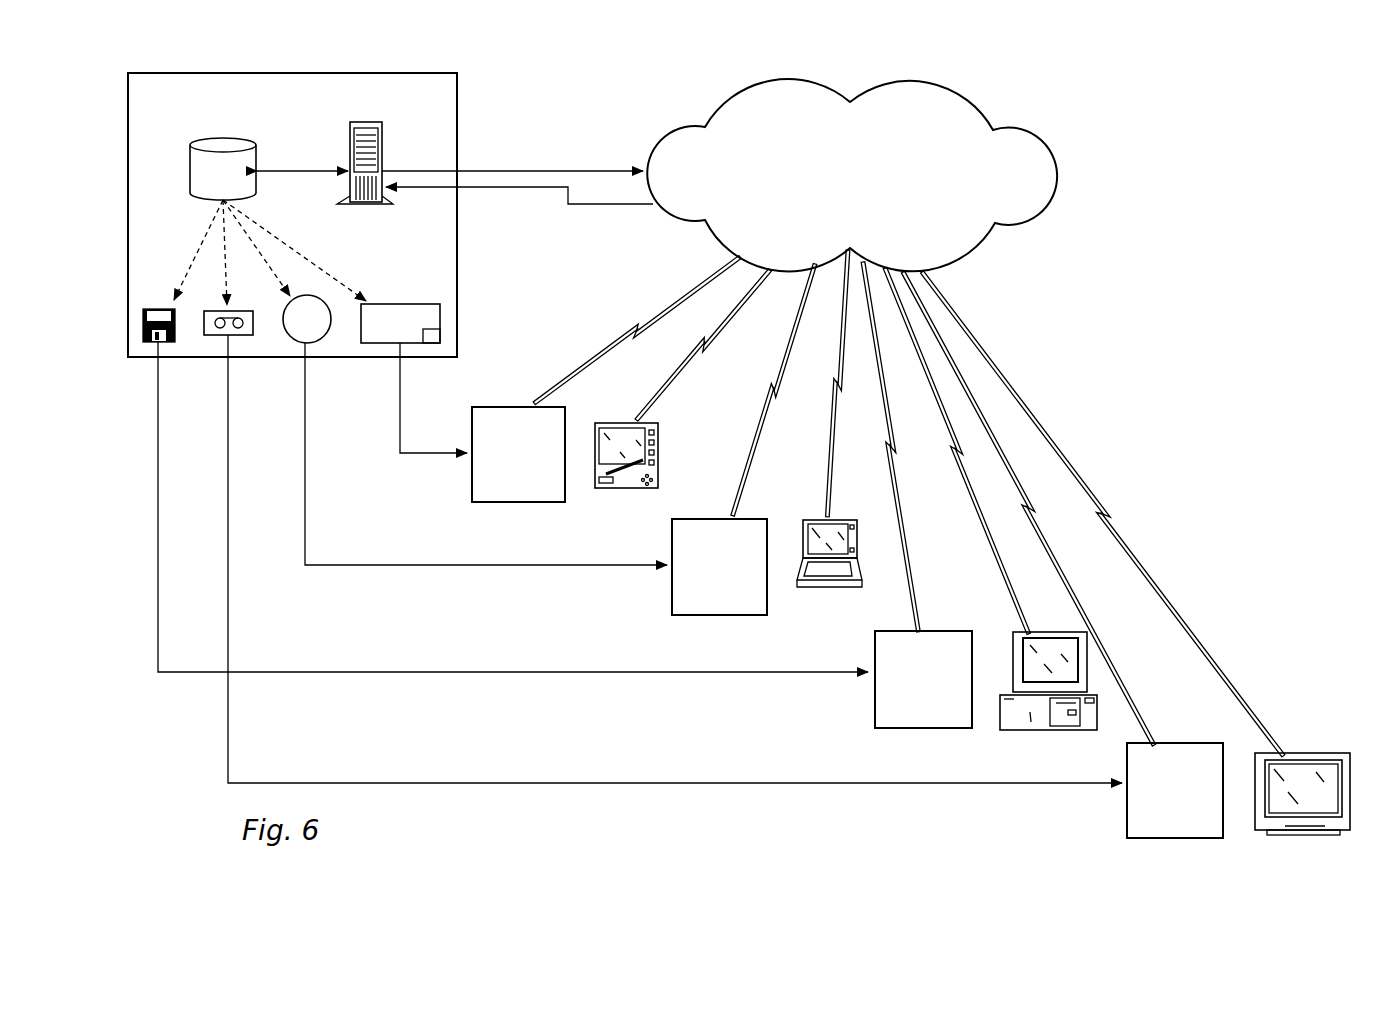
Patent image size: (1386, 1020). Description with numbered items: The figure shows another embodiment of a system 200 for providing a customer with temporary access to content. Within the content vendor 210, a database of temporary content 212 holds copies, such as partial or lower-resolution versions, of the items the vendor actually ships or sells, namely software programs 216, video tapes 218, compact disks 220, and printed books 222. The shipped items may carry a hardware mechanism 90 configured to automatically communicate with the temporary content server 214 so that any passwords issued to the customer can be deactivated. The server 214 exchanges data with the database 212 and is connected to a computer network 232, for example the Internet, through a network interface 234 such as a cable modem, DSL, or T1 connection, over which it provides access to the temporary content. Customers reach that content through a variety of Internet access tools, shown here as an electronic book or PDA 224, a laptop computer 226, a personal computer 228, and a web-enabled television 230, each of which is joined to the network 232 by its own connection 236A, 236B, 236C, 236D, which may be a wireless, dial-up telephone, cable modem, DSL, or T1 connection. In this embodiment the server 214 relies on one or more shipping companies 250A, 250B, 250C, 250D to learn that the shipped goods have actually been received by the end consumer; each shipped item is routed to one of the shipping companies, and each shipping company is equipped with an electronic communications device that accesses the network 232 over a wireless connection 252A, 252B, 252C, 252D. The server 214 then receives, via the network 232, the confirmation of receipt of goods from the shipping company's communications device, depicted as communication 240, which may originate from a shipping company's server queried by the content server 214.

The system 200 is at (1078, 125).
The content vendor 210 is at (292, 215).
The database of temporary content 212 is at (222, 138).
The server 214 is at (366, 122).
The software programs 216 is at (152, 344).
The video tapes 218 is at (217, 344).
The CD 220 is at (298, 344).
The printed books 222 is at (384, 344).
The hardware mechanism 90 is at (432, 344).
The electronic book or PDA 224 is at (627, 423).
The laptop computer 226 is at (843, 518).
The personal computer 228 is at (1015, 731).
The web-enabled television 230 is at (1320, 752).
The computer network 232 is at (852, 175).
The network interface 234 is at (490, 170).
The communication 240 is at (490, 189).
The shipping company 250A is at (518, 454).
The shipping company 250B is at (719, 567).
The shipping company 250C is at (923, 679).
The shipping company 250D is at (1175, 790).
The wireless connection 252A is at (605, 345).
The wireless connection 252B is at (752, 458).
The wireless connection 252C is at (912, 562).
The wireless connection 252D is at (1108, 650).
The connection 236A is at (660, 398).
The connection 236B is at (830, 461).
The connection 236C is at (1011, 587).
The connection 236D is at (1040, 412).